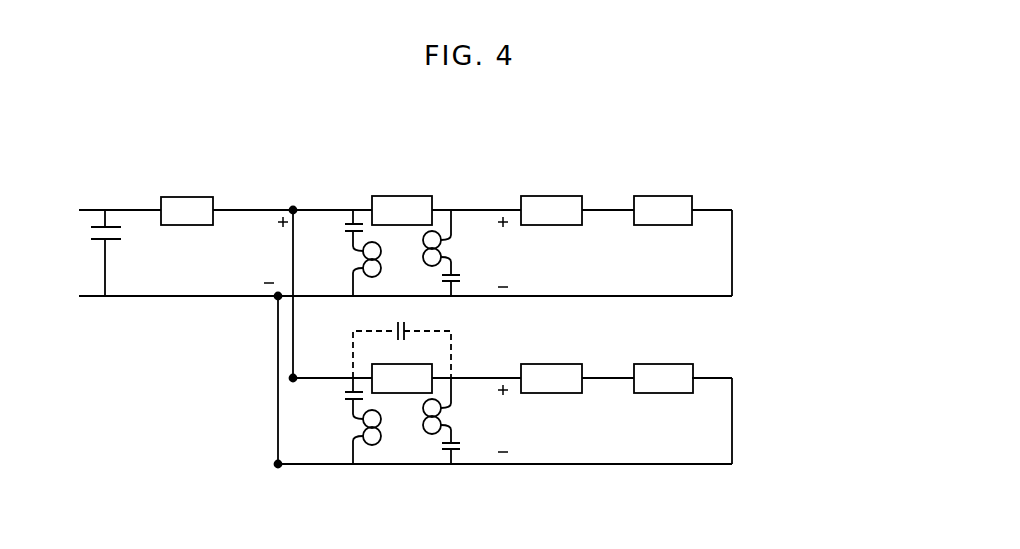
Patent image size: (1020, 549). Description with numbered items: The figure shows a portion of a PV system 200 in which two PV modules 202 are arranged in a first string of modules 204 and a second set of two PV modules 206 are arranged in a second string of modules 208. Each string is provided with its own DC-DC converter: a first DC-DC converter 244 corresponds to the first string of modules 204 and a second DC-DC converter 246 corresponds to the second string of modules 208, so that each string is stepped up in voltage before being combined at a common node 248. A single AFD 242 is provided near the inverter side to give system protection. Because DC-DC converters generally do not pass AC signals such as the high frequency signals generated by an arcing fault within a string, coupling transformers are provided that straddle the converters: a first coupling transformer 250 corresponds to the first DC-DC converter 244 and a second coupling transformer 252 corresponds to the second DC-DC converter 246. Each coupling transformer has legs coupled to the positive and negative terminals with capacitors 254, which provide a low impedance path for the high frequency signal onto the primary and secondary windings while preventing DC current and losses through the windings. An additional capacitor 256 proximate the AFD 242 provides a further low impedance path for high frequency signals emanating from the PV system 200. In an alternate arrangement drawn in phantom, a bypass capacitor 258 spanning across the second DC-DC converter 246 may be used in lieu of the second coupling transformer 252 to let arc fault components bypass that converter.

The PV system 200 is at (677, 104).
The PV modules 202 is at (555, 197).
The first string of modules 204 is at (765, 210).
The PV modules 206 is at (538, 364).
The second string of modules 208 is at (760, 378).
The AFD 242 is at (168, 197).
The first DC-DC converter 244 is at (392, 196).
The second DC-DC converter 246 is at (410, 393).
The common node 248 is at (293, 168).
The first coupling transformer 250 is at (474, 221).
The second coupling transformer 252 is at (478, 385).
The capacitors 254 is at (344, 232).
The additional capacitor 256 is at (113, 247).
The bypass capacitor 258 is at (395, 326).